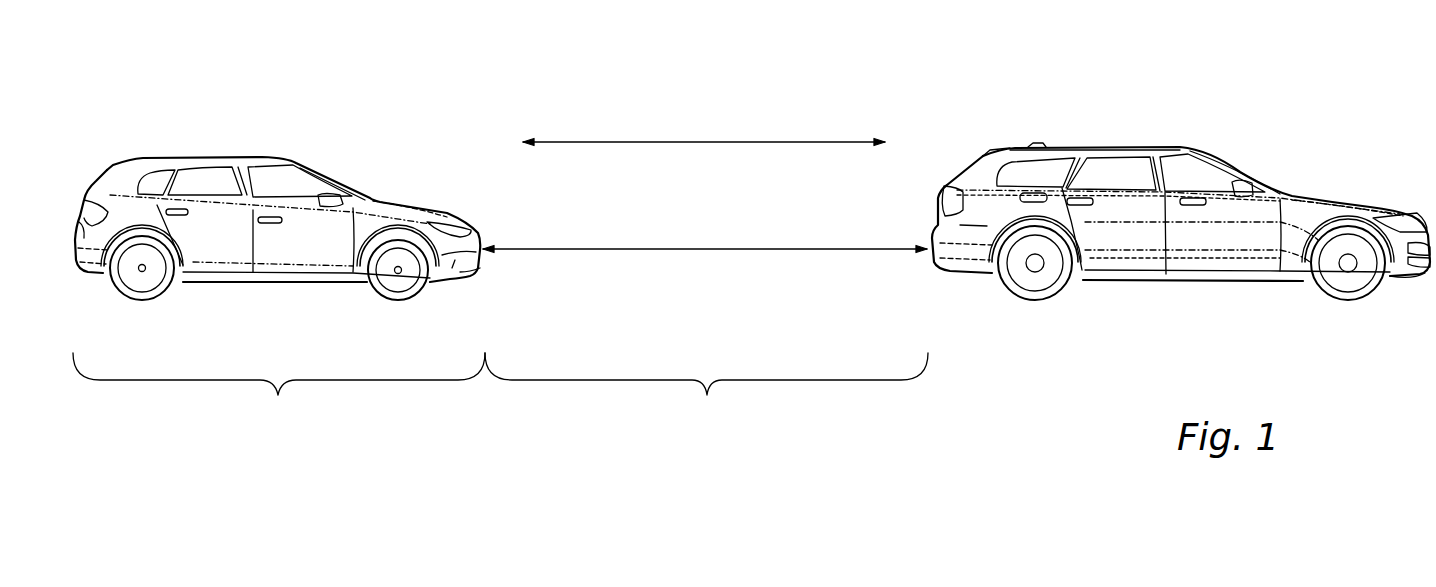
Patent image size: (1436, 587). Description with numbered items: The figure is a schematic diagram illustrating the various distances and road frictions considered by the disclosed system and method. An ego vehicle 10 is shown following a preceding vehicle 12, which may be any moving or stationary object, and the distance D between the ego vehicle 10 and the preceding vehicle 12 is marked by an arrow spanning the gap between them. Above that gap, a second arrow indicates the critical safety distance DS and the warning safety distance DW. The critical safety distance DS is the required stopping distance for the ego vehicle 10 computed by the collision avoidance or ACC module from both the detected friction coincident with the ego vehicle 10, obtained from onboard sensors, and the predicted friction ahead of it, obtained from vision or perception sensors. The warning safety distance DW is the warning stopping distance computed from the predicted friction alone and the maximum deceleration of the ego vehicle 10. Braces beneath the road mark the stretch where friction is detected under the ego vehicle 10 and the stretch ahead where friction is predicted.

The ego vehicle 10 is at (260, 157).
The preceding vehicle 12 is at (1128, 145).
The distance D is at (705, 233).
The critical safety distance DS is at (704, 122).
The warning safety distance DW is at (704, 122).